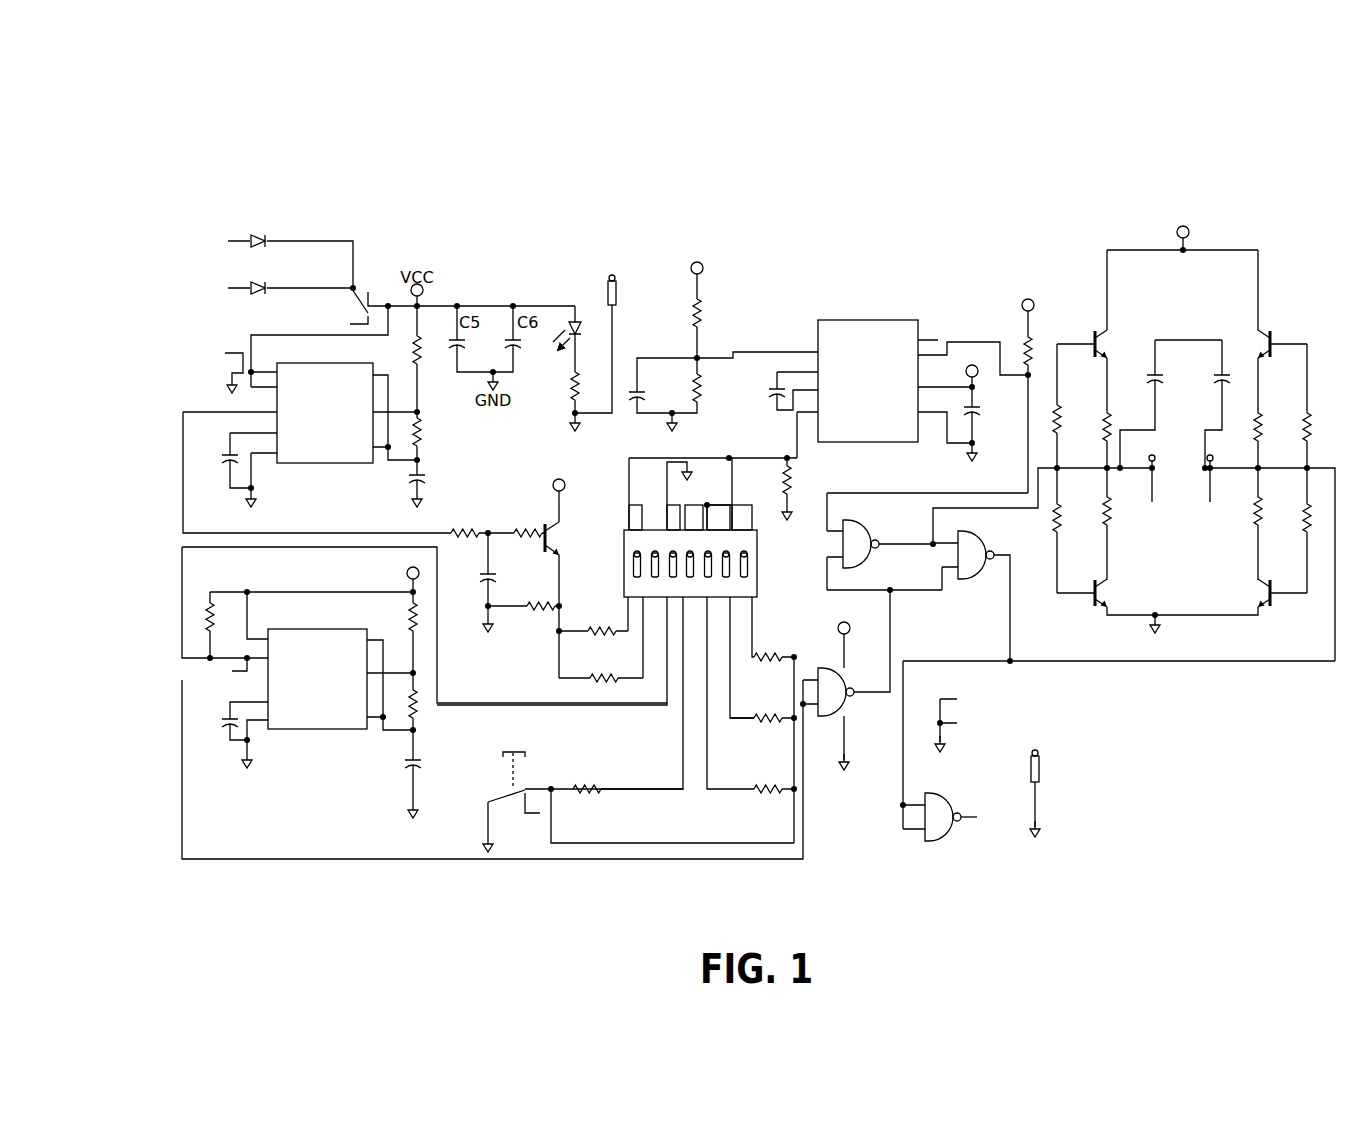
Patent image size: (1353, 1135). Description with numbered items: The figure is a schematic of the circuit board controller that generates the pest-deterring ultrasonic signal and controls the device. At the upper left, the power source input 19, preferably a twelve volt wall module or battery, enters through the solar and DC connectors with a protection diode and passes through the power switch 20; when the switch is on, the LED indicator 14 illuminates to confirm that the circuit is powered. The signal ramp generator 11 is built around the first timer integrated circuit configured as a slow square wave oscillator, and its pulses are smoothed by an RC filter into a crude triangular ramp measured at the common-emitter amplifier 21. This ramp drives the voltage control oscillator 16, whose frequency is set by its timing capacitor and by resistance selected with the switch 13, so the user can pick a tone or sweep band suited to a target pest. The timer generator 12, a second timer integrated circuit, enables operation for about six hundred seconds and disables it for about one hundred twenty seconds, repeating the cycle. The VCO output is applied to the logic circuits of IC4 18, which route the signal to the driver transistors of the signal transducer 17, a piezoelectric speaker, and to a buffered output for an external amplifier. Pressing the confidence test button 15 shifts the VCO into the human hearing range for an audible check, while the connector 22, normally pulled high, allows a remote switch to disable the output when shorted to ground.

The signal ramp generator 11 is at (346, 493).
The timer generator 12 is at (338, 768).
The switch 13 is at (610, 500).
The LED indicator 14 is at (572, 290).
The confidence test button 15 is at (523, 840).
The voltage control oscillator 16 is at (857, 298).
The signal transducer 17 is at (1053, 243).
The logic circuits of IC4 18 is at (855, 826).
The power source input 19 is at (203, 265).
The power switch 20 is at (372, 245).
The common-emitter amplifier 21 is at (527, 500).
The connector 22 is at (176, 668).